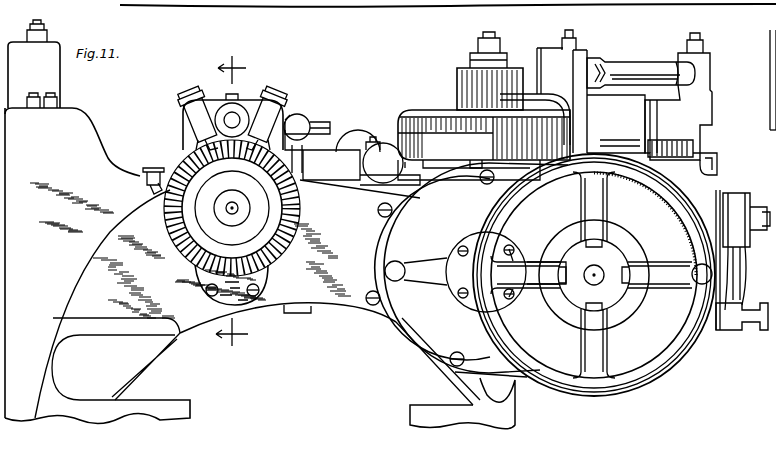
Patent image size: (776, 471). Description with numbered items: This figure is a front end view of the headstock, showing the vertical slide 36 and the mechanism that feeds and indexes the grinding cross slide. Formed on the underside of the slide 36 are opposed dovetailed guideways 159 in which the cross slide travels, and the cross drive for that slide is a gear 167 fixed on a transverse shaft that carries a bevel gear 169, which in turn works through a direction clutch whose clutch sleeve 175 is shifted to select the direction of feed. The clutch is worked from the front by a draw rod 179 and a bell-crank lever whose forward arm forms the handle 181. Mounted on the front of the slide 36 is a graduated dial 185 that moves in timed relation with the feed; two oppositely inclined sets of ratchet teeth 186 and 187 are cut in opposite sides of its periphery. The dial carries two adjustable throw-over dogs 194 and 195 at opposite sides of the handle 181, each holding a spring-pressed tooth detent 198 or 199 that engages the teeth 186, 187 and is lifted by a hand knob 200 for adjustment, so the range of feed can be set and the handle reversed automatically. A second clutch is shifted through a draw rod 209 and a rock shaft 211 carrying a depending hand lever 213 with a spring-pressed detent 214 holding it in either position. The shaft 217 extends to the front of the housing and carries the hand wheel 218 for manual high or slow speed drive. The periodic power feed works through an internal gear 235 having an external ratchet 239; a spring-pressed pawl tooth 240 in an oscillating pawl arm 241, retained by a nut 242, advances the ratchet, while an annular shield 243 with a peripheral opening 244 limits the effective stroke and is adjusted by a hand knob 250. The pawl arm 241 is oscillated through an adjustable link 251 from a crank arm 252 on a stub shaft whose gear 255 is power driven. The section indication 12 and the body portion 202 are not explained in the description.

The section line indication 12 is at (232, 200).
The vertical slide 36 is at (97, 147).
The dovetailed guideways 159 is at (168, 400).
The gear 167 is at (298, 313).
The bevel gear 169 is at (764, 149).
The clutch sleeve 175 is at (764, 92).
The draw rod 179 is at (308, 122).
The handle 181 is at (236, 112).
The graduated dial 185 is at (212, 264).
The ratchet teeth 186 is at (166, 220).
The ratchet teeth 187 is at (295, 214).
The throw-over dog 194 is at (200, 118).
The throw-over dog 195 is at (270, 110).
The tooth detent 198 is at (200, 147).
The tooth detent 199 is at (322, 151).
The hand knobs 200 is at (204, 92).
The cylinder body 202 is at (420, 327).
The draw rod 209 is at (742, 258).
The rock shaft 211 is at (745, 245).
The hand lever 213 is at (740, 270).
The detent 214 is at (768, 322).
The shaft 217 is at (600, 272).
The hand wheel 218 is at (658, 397).
The internal gear 235 is at (402, 112).
The ratchet 239 is at (492, 139).
The pawl tooth 240 is at (580, 137).
The pawl arm 241 is at (519, 95).
The nut 242 is at (478, 58).
The annular shield 243 is at (433, 130).
The opening 244 is at (470, 150).
The hand knob 250 is at (378, 146).
The link 251 is at (630, 58).
The crank arm 252 is at (700, 108).
The gear 255 is at (695, 140).